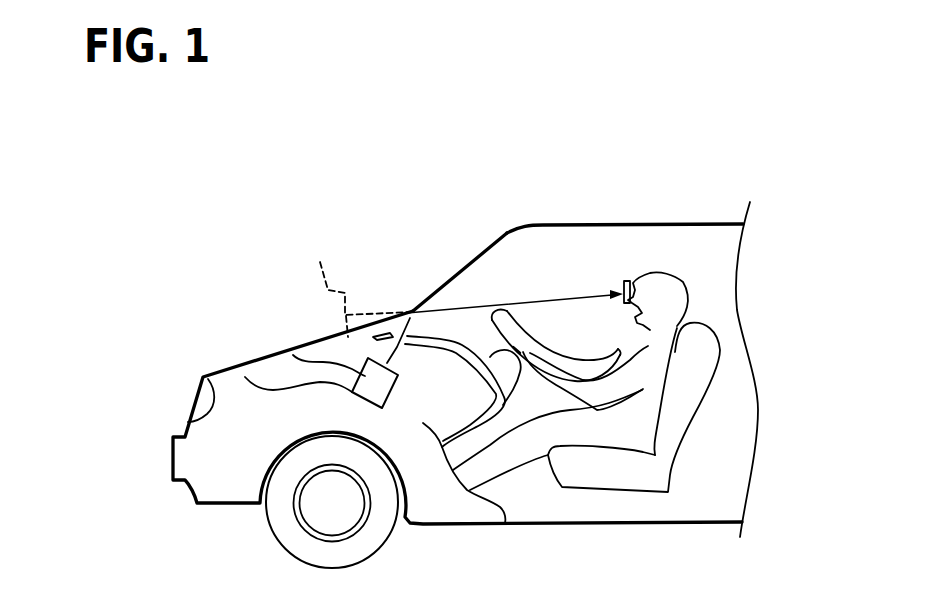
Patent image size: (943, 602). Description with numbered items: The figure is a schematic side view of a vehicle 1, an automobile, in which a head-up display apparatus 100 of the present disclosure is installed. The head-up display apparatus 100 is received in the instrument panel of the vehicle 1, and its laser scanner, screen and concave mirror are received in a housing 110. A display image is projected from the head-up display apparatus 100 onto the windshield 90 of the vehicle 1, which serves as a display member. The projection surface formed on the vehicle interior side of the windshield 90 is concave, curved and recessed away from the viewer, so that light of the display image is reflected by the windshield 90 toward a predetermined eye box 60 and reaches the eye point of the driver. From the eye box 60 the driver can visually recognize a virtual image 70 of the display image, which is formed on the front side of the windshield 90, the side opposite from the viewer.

The vehicle 1 is at (697, 225).
The eye box 60 is at (623, 281).
The virtual image 70 is at (358, 286).
The windshield 90 is at (455, 270).
The head-up display apparatus 100 is at (293, 355).
The housing 110 is at (245, 377).